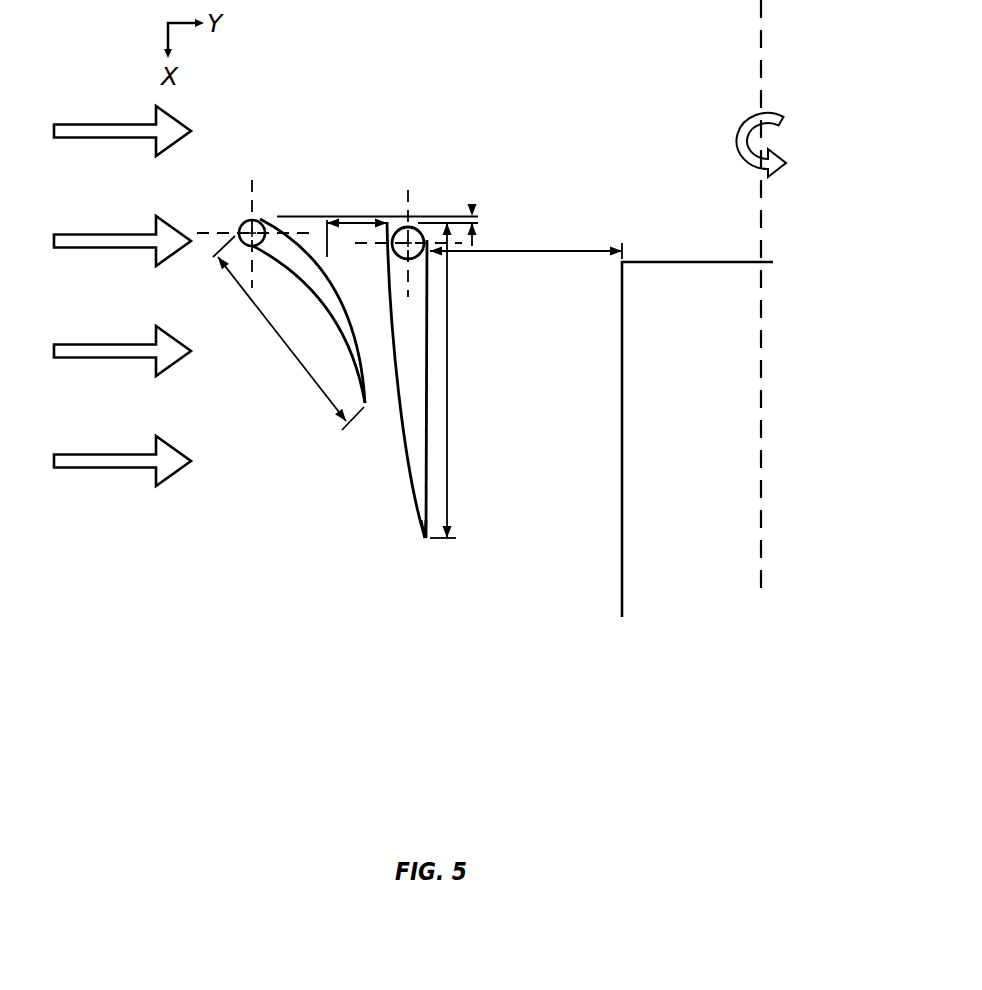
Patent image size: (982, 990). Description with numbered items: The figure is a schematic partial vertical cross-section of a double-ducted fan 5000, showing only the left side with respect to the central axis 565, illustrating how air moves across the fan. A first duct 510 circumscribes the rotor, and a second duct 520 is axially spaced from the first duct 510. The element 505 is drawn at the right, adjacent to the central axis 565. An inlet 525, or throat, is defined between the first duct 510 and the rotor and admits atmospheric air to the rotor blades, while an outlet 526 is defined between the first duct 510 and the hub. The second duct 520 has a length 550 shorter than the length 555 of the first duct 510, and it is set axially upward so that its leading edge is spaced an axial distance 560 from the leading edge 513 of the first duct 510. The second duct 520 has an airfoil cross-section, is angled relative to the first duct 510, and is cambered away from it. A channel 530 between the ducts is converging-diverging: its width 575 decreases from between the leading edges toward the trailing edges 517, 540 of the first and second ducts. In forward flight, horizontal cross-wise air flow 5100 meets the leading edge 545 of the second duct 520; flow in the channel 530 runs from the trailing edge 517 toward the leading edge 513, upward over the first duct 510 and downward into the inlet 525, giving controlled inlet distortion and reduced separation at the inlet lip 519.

The double-ducted fan 5000 is at (610, 57).
The horizontal or cross-wise air flow 5100 is at (106, 477).
The leading edge of the second duct 545 is at (243, 222).
The second duct 520 is at (330, 308).
The length of the second duct 550 is at (273, 337).
The trailing edge of the second duct 540 is at (360, 392).
The channel 530 is at (384, 396).
The leading edge of the first duct 513 is at (398, 227).
The inlet lip 519 is at (421, 229).
The first duct 510 is at (419, 462).
The trailing edge of the first duct 517 is at (424, 512).
The width of the channel 575 is at (353, 222).
The axial distance 560 is at (472, 205).
The length of the first duct 555 is at (448, 383).
The inlet 525 is at (542, 249).
The hub / wall 505 is at (665, 283).
The central axis 565 is at (762, 567).
The outlet 526 is at (517, 569).